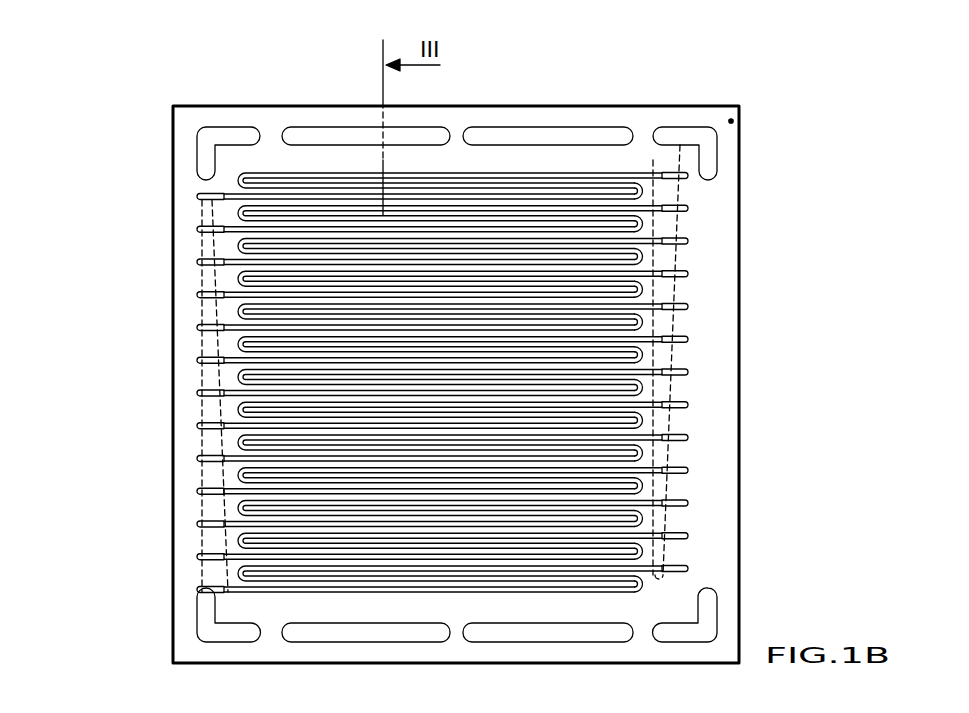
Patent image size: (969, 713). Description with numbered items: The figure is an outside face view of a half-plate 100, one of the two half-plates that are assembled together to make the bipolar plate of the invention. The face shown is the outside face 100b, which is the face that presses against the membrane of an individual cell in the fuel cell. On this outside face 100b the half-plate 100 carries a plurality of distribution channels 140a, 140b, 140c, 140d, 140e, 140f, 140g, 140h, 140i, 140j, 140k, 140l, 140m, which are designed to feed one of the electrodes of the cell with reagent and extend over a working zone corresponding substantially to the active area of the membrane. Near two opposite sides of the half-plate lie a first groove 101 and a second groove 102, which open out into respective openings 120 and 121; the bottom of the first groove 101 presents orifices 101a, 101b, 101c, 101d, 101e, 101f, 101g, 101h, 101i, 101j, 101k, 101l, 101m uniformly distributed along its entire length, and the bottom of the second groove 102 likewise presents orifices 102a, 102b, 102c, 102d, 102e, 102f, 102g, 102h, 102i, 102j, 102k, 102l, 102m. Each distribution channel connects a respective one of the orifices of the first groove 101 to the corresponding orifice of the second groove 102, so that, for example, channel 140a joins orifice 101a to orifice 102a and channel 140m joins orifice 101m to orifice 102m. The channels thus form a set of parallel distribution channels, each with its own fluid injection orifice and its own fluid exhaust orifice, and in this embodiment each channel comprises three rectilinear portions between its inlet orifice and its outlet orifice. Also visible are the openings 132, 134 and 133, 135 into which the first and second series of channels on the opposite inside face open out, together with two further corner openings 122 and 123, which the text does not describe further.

The half-plate 100 is at (140, 90).
The outside face 100b is at (731, 121).
The first groove 101 is at (216, 610).
The orifice 101a is at (198, 590).
The orifice 101b is at (198, 557).
The orifice 101c is at (198, 524).
The orifice 101d is at (198, 491).
The orifice 101e is at (198, 458).
The orifice 101f is at (198, 426).
The orifice 101g is at (198, 393).
The orifice 101h is at (198, 360).
The orifice 101i is at (198, 328).
The orifice 101j is at (198, 295).
The orifice 101k is at (198, 262).
The orifice 101l is at (198, 229).
The orifice 101m is at (198, 196).
The second groove 102 is at (653, 160).
The orifice 102a is at (688, 568).
The orifice 102b is at (688, 536).
The orifice 102c is at (688, 503).
The orifice 102d is at (688, 470).
The orifice 102e is at (688, 438).
The orifice 102f is at (688, 405).
The orifice 102g is at (688, 372).
The orifice 102h is at (688, 339).
The orifice 102i is at (688, 306).
The orifice 102j is at (688, 274).
The orifice 102k is at (688, 241).
The orifice 102l is at (688, 208).
The orifice 102m is at (688, 176).
The opening 120 is at (212, 643).
The opening 121 is at (700, 135).
The corner slot 122 is at (686, 643).
The corner slot 123 is at (228, 135).
The opening 132 is at (520, 135).
The opening 133 is at (335, 135).
The opening 134 is at (518, 643).
The opening 135 is at (402, 643).
The distribution channel 140a is at (646, 588).
The distribution channel 140b is at (646, 551).
The distribution channel 140c is at (646, 518).
The distribution channel 140d is at (646, 486).
The distribution channel 140e is at (646, 453).
The distribution channel 140f is at (646, 420).
The distribution channel 140g is at (646, 388).
The distribution channel 140h is at (646, 355).
The distribution channel 140i is at (646, 322).
The distribution channel 140j is at (646, 289).
The distribution channel 140k is at (646, 256).
The distribution channel 140l is at (646, 224).
The distribution channel 140m is at (643, 185).